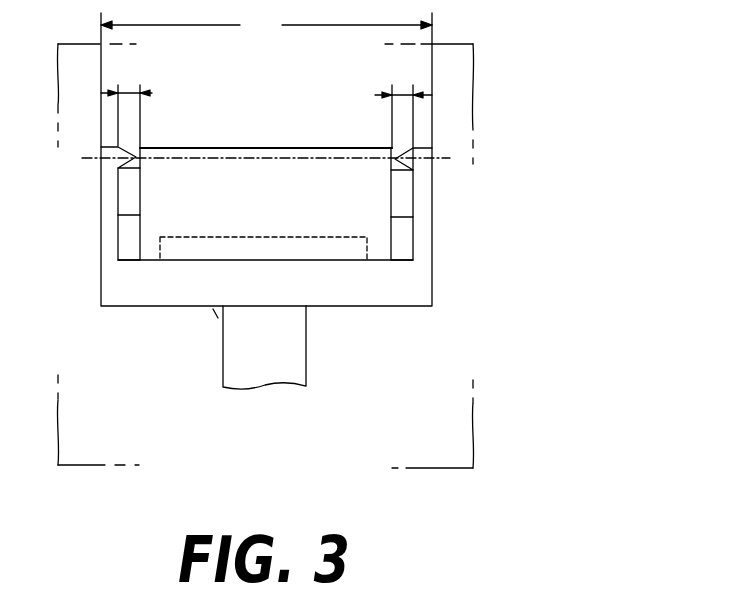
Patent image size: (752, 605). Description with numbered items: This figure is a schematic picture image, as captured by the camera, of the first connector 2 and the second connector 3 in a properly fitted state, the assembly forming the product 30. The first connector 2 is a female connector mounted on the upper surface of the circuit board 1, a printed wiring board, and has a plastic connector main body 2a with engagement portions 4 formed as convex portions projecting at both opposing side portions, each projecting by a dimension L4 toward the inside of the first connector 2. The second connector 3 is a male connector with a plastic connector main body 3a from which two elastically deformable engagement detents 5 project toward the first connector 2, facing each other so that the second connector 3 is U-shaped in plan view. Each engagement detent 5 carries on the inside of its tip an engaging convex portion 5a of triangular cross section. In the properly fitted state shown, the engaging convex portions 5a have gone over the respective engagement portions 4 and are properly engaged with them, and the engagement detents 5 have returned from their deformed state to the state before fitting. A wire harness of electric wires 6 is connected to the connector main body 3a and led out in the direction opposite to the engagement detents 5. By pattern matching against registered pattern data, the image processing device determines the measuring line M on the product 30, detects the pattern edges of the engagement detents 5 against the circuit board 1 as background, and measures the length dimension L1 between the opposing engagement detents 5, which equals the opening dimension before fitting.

The circuit board 1 is at (433, 378).
The first connector 2 is at (241, 147).
The connector main body 2a is at (275, 159).
The second connector 3 is at (152, 306).
The connector main body 3a is at (197, 296).
The engagement portion 4 is at (128, 200).
The engagement detent 5 is at (100, 208).
The engaging convex portion 5a is at (112, 154).
The electric wires 6 is at (298, 356).
The product 30 is at (512, 228).
The line M is at (440, 161).
The length dimension L1 is at (266, 25).
The dimension L4 is at (266, 115).